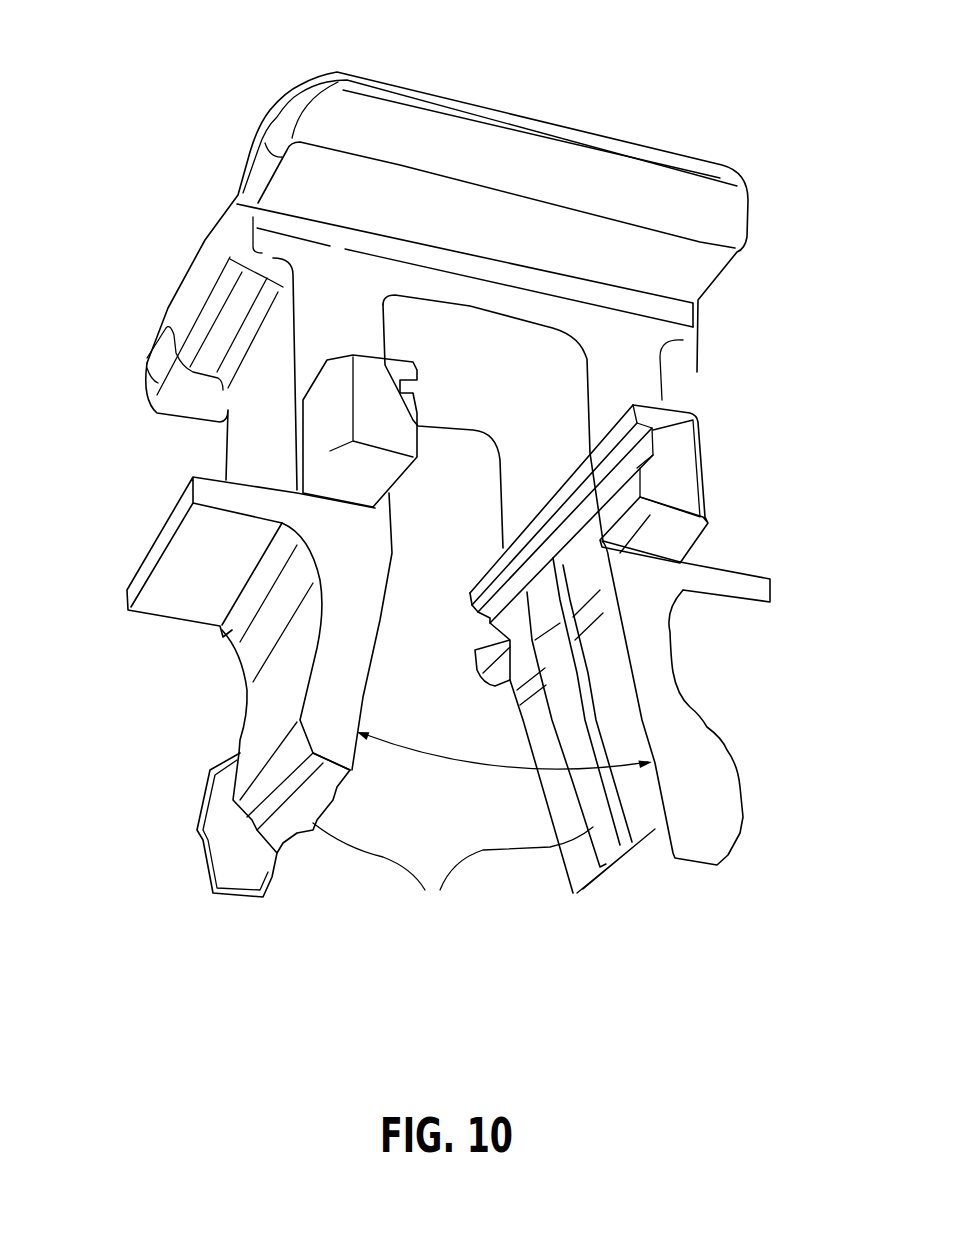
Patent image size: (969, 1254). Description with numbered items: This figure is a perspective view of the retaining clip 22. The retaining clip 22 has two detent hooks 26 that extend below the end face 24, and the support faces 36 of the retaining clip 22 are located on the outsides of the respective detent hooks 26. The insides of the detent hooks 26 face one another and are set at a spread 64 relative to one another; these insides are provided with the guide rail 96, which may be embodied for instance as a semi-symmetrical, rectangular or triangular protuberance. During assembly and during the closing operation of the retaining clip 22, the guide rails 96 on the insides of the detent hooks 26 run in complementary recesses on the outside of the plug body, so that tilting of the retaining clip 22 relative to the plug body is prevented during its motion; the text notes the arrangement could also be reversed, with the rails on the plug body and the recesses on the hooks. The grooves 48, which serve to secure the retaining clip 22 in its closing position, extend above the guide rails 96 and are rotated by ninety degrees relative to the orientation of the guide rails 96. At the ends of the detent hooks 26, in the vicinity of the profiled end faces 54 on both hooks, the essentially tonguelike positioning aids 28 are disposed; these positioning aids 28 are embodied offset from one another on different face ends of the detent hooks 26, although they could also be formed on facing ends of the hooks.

The retaining clip 22 is at (262, 80).
The end face 24 is at (600, 133).
The detent hooks 26 is at (320, 690).
The positioning aids 28 is at (228, 868).
The support faces 36 is at (207, 491).
The grooves 48 is at (407, 400).
The profiled end faces 54 is at (258, 798).
The spread 64 is at (472, 757).
The guide rail 96 is at (453, 874).